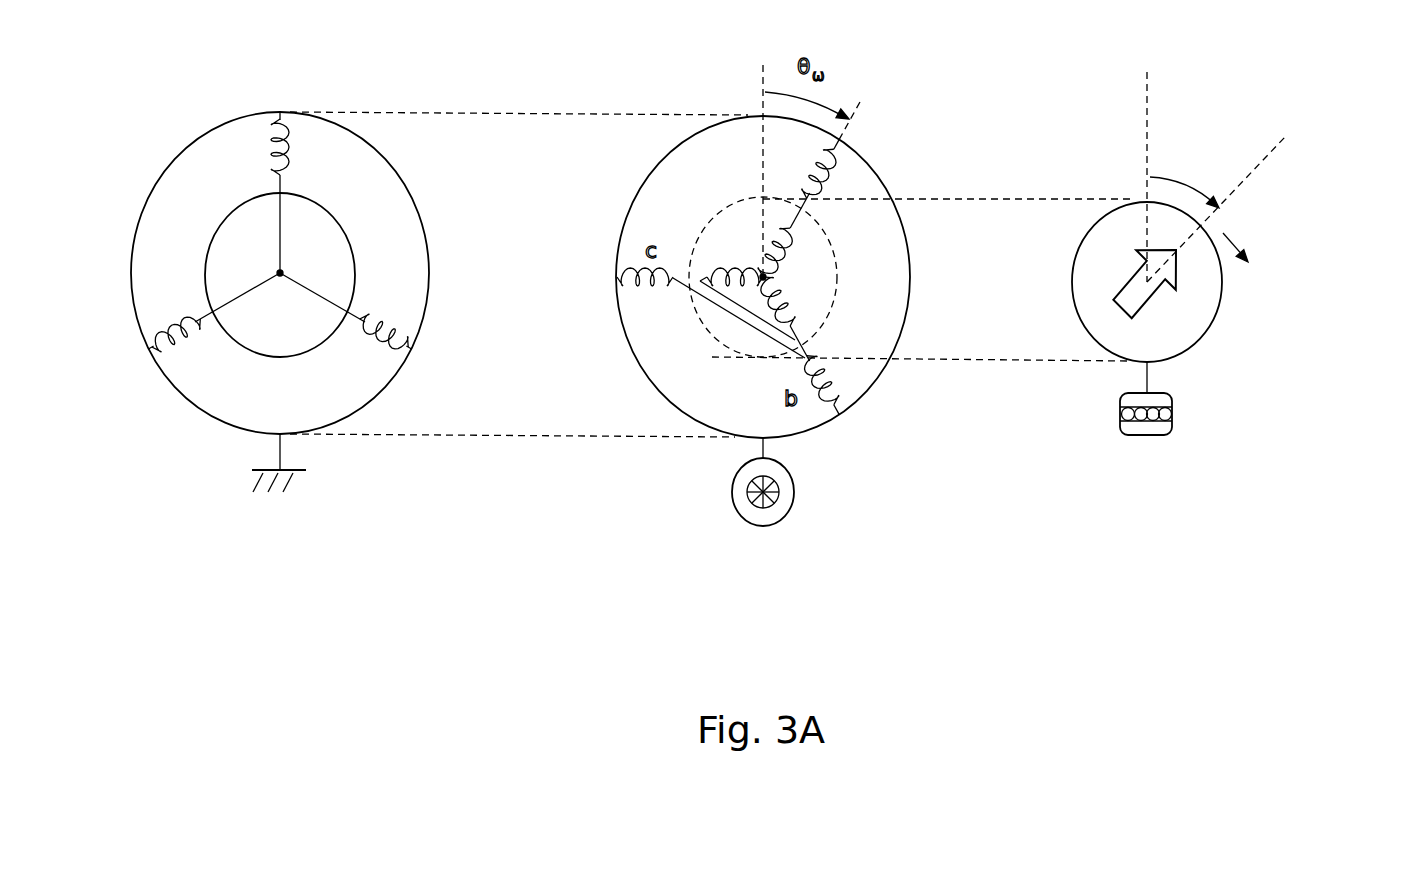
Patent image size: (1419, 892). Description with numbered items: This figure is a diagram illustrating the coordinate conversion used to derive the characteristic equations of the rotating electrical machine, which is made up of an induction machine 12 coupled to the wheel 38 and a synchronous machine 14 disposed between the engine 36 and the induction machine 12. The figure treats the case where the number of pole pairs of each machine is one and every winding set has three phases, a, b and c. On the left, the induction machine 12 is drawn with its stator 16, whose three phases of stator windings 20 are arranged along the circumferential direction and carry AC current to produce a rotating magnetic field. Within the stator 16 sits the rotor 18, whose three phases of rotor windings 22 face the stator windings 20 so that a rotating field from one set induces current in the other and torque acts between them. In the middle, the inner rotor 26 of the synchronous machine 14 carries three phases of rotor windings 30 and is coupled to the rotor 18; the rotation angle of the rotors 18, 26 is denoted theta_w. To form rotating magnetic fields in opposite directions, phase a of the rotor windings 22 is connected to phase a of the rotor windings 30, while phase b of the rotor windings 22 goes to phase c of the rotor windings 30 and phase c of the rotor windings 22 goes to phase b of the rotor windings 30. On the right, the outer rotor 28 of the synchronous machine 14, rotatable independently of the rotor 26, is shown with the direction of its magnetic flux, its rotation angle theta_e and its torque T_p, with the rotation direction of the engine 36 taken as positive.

The induction machine 12 is at (476, 452).
The synchronous machine 14 is at (986, 380).
The stator 16 is at (172, 162).
The rotor 18 is at (648, 178).
The stator windings 20 is at (267, 137).
The rotor windings 22 is at (842, 150).
The rotor 26 is at (833, 300).
The rotor 28 is at (1218, 312).
The rotor windings 30 is at (797, 242).
The engine 36 is at (1147, 435).
The wheel 38 is at (794, 492).